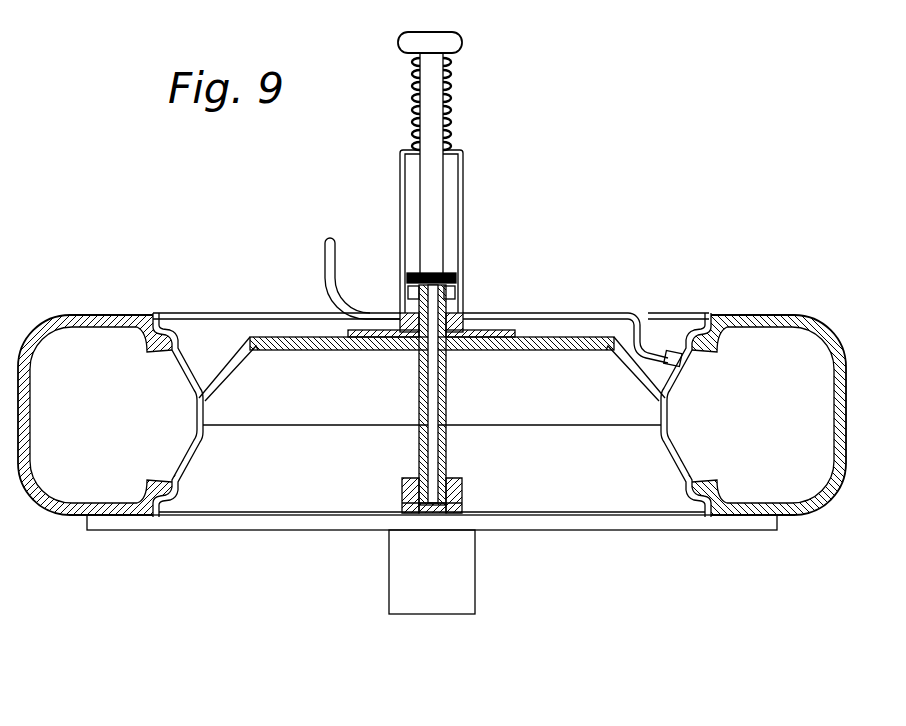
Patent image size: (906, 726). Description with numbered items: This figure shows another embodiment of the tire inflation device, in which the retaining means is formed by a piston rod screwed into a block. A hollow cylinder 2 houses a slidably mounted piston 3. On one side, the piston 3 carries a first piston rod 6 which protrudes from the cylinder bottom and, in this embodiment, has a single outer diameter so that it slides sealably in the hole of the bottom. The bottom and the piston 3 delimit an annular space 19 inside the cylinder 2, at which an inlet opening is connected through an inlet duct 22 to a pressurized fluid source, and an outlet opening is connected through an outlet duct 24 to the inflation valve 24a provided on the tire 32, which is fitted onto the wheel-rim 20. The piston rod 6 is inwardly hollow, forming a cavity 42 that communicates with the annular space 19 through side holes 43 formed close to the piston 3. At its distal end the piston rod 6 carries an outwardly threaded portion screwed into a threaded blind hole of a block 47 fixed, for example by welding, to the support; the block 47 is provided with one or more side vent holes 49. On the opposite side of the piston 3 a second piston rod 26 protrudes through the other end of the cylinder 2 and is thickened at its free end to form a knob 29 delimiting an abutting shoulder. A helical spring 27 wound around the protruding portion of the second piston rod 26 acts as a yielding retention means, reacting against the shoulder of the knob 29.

The cylinder 2 is at (402, 195).
The piston 3 is at (448, 272).
The first piston rod 6 is at (438, 395).
The annular space 19 is at (448, 305).
The wheel-rim 20 is at (238, 336).
The inlet duct 22 is at (325, 262).
The outlet duct 24 is at (613, 311).
The inflation valve 24a is at (675, 353).
The second piston rod 26 is at (422, 98).
The helical spring 27 is at (450, 90).
The knob 29 is at (440, 33).
The tire 32 is at (88, 318).
The cavity 42 is at (433, 445).
The side holes 43 is at (416, 302).
The block 47 is at (460, 488).
The side vent holes 49 is at (462, 502).